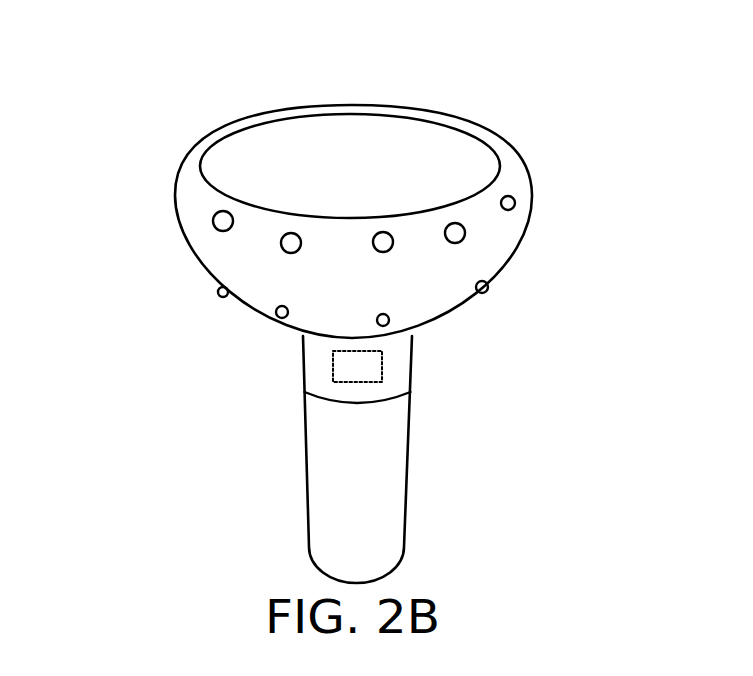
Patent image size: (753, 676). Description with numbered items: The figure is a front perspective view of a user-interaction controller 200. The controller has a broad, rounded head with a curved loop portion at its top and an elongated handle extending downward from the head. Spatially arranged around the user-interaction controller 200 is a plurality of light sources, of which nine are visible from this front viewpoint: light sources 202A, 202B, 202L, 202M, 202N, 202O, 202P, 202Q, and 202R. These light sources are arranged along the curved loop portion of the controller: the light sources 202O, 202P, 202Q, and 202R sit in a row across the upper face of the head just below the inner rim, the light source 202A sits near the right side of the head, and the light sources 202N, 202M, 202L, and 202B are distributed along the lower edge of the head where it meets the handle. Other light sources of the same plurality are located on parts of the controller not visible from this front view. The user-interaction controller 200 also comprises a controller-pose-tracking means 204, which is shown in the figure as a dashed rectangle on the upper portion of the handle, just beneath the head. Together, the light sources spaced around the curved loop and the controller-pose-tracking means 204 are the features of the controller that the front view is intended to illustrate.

The user-interaction controller 200 is at (592, 75).
The light source 202A is at (580, 179).
The light source 202B is at (544, 300).
The light source 202L is at (466, 338).
The light source 202M is at (213, 354).
The light source 202N is at (168, 314).
The light source 202O is at (140, 202).
The light source 202P is at (255, 147).
The light source 202Q is at (342, 145).
The light source 202R is at (423, 139).
The controller-pose-tracking means 204 is at (426, 396).